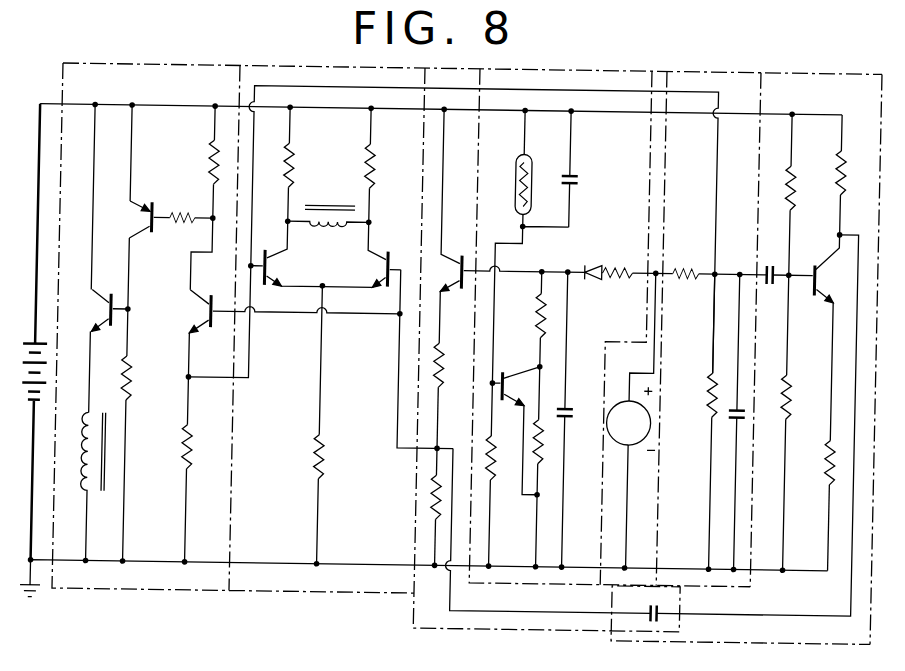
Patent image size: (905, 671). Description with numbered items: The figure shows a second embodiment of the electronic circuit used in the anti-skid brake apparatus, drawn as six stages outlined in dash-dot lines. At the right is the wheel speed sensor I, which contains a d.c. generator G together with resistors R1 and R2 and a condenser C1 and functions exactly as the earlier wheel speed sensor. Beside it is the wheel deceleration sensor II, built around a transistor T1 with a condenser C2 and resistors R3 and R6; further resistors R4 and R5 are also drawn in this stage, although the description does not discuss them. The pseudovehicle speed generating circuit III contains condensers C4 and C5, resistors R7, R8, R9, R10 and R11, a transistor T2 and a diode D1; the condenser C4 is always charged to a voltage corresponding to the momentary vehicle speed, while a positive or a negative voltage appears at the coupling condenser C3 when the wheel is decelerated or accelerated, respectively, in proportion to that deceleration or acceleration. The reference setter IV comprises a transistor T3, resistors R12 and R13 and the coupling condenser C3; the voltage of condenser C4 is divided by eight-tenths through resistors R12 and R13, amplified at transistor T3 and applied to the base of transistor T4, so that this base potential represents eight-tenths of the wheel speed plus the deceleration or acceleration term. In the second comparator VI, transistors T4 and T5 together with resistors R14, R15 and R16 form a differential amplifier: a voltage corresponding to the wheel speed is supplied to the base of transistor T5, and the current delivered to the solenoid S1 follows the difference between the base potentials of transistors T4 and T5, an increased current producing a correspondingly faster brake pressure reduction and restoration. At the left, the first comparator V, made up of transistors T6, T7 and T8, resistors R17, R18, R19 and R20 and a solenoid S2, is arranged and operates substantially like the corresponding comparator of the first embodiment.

The first comparator V is at (165, 63).
The second comparator VI is at (318, 63).
The reference setter IV is at (469, 62).
The pseudovehicle speed generating circuit III is at (578, 62).
The wheel speed sensor I is at (688, 62).
The wheel deceleration sensor II is at (787, 62).
The transistor T1 is at (835, 338).
The transistor T2 is at (515, 417).
The transistor T3 is at (442, 226).
The transistor T4 is at (361, 255).
The transistor T5 is at (286, 254).
The transistor T6 is at (188, 334).
The transistor T7 is at (143, 219).
The transistor T8 is at (102, 351).
The resistor R1 is at (686, 261).
The resistor R2 is at (697, 422).
The resistor R3 is at (801, 423).
The resistor R4' R4 is at (807, 195).
The resistor R5' R5 is at (856, 175).
The resistor R6 is at (816, 505).
The resistor R7 is at (619, 291).
The resistor R8 is at (526, 319).
The resistor R9 is at (553, 467).
The resistor R10 is at (536, 178).
The resistor R11 is at (494, 433).
The resistor R12 is at (447, 375).
The resistor R13 is at (440, 490).
The resistor R14 is at (391, 165).
The resistor R15 is at (310, 164).
The resistor R16 is at (341, 425).
The resistor R17 is at (208, 470).
The resistor R18 is at (194, 198).
The resistor R19 is at (187, 232).
The resistor R20 is at (148, 400).
The condenser C1 is at (746, 414).
The condenser C2 is at (776, 263).
The coupling condenser C3 is at (636, 602).
The condenser C4 is at (577, 420).
The condenser C5 is at (588, 169).
The diode D1 is at (590, 258).
The solenoid S1 is at (329, 201).
The solenoid S2 is at (80, 486).
The d.c. generator G is at (631, 421).